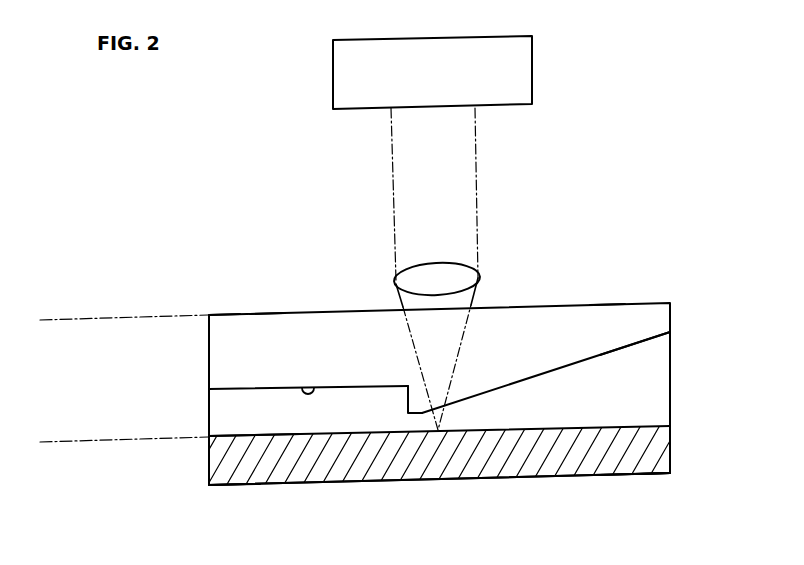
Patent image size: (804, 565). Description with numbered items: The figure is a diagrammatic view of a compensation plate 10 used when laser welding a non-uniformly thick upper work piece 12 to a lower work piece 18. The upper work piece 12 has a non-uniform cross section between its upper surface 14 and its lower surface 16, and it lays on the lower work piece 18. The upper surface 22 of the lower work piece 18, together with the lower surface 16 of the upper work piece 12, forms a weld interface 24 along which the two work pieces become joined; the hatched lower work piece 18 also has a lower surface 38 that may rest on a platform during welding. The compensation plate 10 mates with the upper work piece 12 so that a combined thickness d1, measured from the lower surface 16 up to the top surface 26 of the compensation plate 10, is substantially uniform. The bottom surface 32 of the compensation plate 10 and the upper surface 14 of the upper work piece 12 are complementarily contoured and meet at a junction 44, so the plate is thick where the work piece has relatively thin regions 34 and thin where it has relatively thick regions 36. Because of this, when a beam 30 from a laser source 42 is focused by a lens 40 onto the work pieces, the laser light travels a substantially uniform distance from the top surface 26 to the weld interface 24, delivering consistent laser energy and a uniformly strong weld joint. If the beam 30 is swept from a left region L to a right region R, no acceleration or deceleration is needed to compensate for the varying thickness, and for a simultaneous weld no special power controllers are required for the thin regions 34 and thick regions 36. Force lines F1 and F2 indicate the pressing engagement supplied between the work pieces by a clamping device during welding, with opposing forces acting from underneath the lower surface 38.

The compensation plate 10 is at (670, 316).
The upper work piece 12 is at (670, 403).
The upper surface 14 is at (240, 388).
The lower surface 16 is at (243, 436).
The lower work piece 18 is at (673, 460).
The upper surface 22 is at (622, 427).
The weld interface 24 is at (670, 425).
The top surface 26 is at (224, 315).
The beam 30 is at (474, 297).
The bottom surface 32 is at (590, 357).
The relatively thin regions 34 is at (425, 408).
The relatively thick regions 36 is at (634, 342).
The lower surface 38 is at (405, 482).
The lens 40 is at (437, 270).
The laser source 42 is at (532, 70).
The junction 44 is at (318, 383).
The combined thickness d1 is at (79, 322).
The force line F1 is at (267, 313).
The force line F2 is at (607, 304).
The left region L is at (230, 485).
The right region R is at (638, 475).